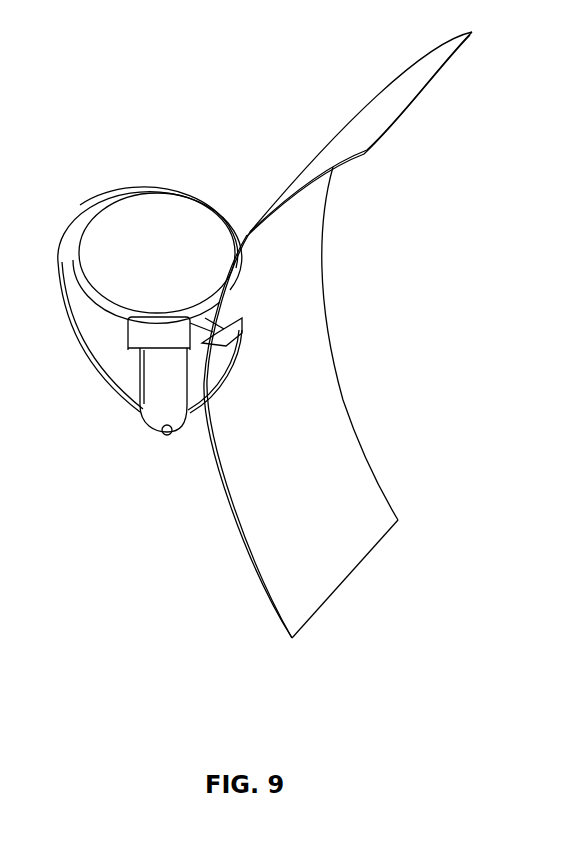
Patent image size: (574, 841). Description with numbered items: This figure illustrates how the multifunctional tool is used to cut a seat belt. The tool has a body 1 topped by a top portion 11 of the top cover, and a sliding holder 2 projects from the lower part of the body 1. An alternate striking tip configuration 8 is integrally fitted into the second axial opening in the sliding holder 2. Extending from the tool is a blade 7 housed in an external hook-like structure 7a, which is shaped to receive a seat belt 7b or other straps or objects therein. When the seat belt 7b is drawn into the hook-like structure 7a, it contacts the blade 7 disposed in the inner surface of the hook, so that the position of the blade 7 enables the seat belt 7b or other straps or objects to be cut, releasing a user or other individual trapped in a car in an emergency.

The body 1 is at (78, 352).
The top portion of the top cover 11 is at (152, 218).
The sliding holder 2 is at (142, 425).
The striking tip configuration 8 is at (168, 437).
The blade 7 is at (207, 340).
The external hook-like structure 7a is at (218, 365).
The seat belt 7b is at (295, 287).